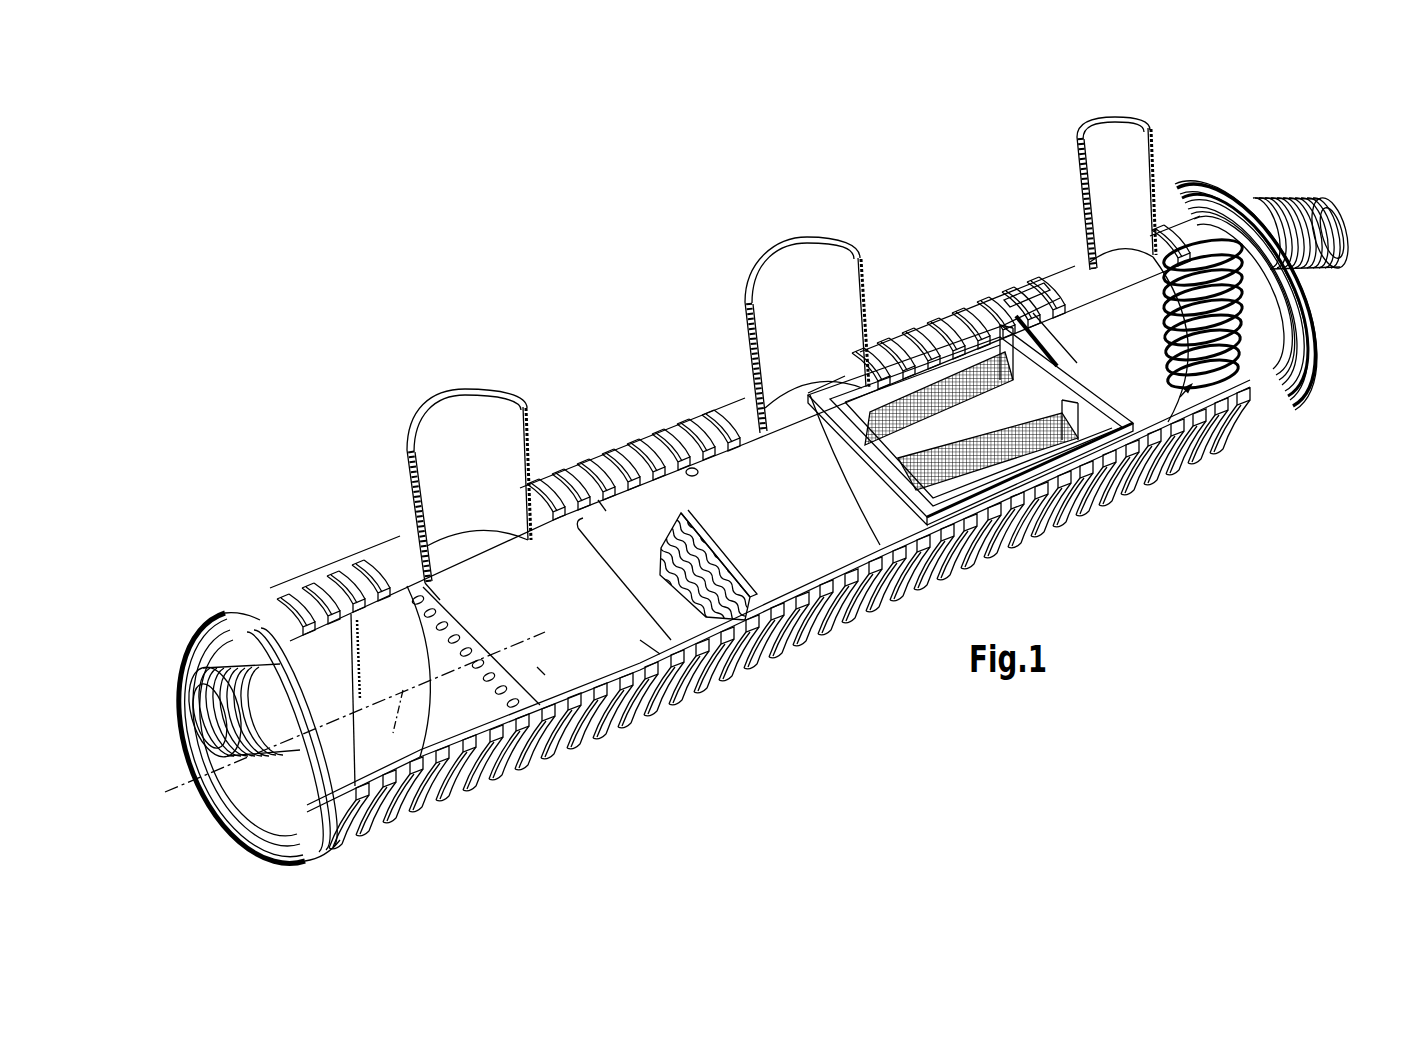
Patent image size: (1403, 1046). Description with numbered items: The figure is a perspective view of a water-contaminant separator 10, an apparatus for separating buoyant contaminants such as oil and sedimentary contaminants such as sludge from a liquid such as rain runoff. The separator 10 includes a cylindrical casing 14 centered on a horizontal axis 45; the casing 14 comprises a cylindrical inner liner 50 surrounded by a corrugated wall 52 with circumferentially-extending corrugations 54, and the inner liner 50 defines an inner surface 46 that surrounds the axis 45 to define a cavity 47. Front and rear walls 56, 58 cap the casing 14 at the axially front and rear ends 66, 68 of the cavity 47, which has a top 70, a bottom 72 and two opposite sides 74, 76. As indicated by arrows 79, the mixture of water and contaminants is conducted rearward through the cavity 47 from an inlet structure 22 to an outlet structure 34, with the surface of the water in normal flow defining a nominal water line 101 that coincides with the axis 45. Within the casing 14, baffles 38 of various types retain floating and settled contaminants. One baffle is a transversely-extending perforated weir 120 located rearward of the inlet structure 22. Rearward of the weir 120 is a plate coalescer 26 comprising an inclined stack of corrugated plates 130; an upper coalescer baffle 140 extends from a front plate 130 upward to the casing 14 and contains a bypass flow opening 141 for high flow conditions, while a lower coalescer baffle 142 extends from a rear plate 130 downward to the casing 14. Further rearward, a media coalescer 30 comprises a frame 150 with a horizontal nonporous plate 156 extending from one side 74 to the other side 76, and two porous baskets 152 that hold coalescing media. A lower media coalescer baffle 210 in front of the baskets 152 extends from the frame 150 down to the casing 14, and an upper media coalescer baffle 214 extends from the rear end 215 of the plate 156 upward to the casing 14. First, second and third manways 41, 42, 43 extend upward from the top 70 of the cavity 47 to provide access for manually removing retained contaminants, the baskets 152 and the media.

The water-contaminant separator 10 is at (1248, 150).
The cylindrical casing 14 is at (1022, 280).
The inlet structure 22 is at (183, 637).
The plate coalescer 26 is at (716, 531).
The media coalescer 30 is at (855, 503).
The outlet structure 34 is at (1289, 196).
The baffles 38 is at (1072, 331).
The first manway 41 is at (512, 396).
The second manway 42 is at (850, 234).
The third manway 43 is at (1110, 117).
The horizontal axis 45 is at (437, 680).
The inner surface 46 is at (460, 604).
The cavity 47 is at (733, 423).
The cylindrical inner liner 50 is at (603, 507).
The corrugated wall 52 is at (662, 448).
The corrugations 54 is at (613, 472).
The front wall 56 is at (277, 790).
The rear wall 58 is at (1313, 375).
The front end 66 is at (287, 803).
The rear end 68 is at (1310, 340).
The top 70 is at (582, 528).
The bottom 72 is at (537, 667).
The side 74 is at (482, 572).
The side 76 is at (653, 651).
The arrows 79 is at (205, 720).
The nominal water line 101 is at (396, 724).
The perforated weir 120 is at (433, 657).
The corrugated plates 130 is at (778, 598).
The upper coalescer baffle 140 is at (633, 597).
The bypass flow opening 141 is at (682, 478).
The lower coalescer baffle 142 is at (723, 557).
The frame 150 is at (1092, 388).
The porous baskets 152 is at (1070, 470).
The nonporous plate 156 is at (1113, 413).
The lower media coalescer baffle 210 is at (840, 473).
The upper media coalescer baffle 214 is at (1080, 357).
The rear end 215 is at (997, 293).